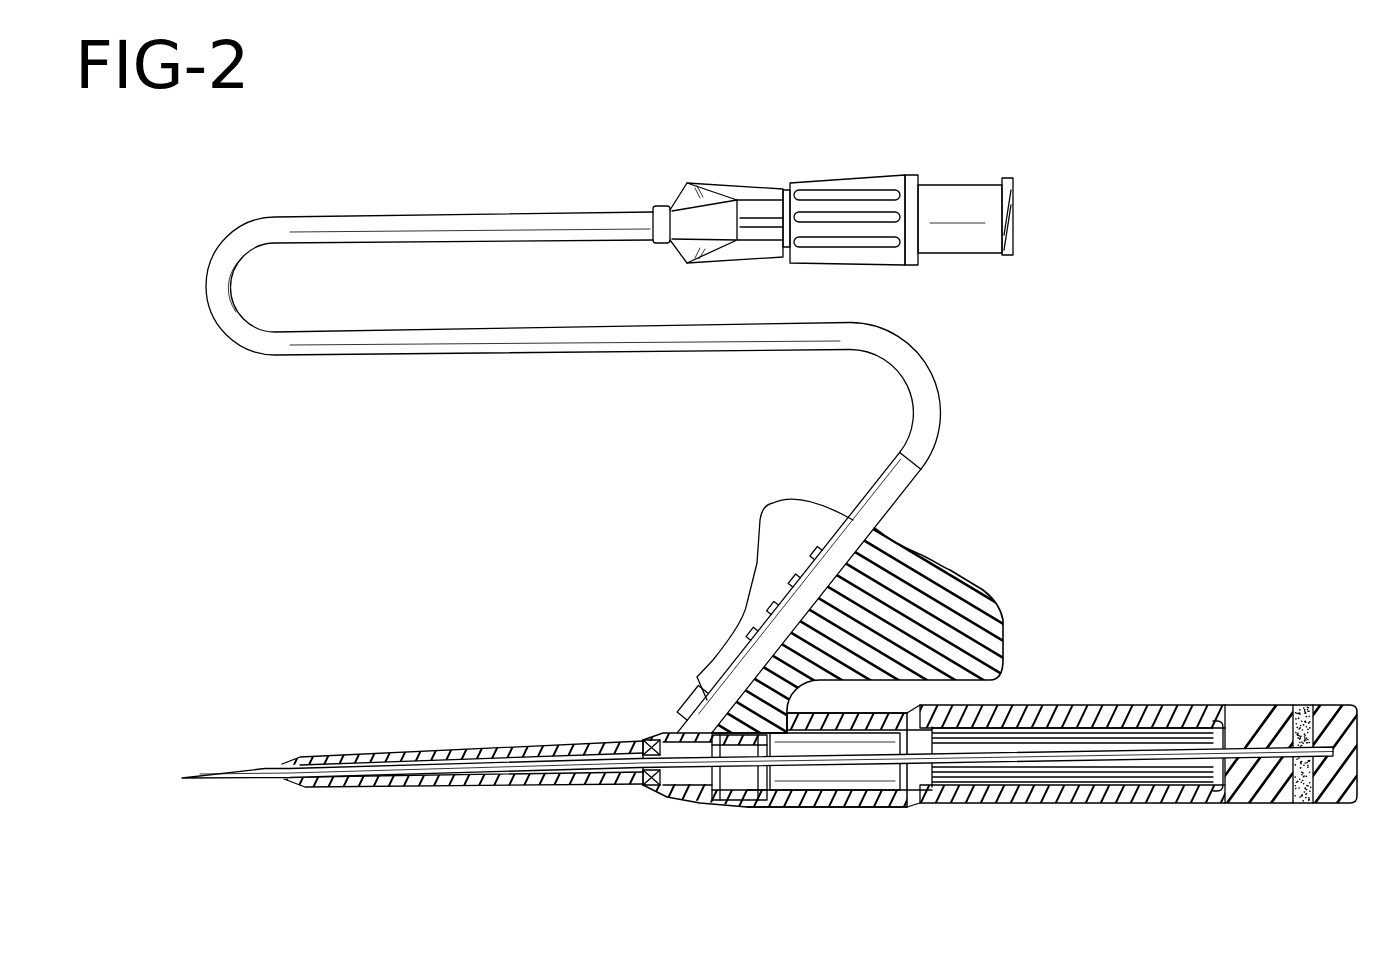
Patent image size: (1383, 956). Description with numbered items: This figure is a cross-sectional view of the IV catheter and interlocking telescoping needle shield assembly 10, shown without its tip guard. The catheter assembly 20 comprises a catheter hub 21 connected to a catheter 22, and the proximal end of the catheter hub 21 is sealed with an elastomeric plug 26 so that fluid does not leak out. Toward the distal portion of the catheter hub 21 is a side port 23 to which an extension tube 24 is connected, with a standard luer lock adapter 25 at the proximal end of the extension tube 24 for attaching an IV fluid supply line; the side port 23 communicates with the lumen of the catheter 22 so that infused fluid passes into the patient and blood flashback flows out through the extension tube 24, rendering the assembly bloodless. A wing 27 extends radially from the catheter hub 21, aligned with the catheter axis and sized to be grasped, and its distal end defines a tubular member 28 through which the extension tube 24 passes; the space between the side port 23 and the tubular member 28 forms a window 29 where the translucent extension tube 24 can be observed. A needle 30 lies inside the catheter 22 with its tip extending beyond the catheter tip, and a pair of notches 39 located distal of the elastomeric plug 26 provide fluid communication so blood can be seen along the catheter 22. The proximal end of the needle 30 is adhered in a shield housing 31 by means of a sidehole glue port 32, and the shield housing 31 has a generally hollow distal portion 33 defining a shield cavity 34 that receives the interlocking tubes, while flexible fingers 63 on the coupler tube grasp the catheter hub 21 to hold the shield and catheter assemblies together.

The catheter assembly with interlocking telescopic needle shield assembly 10 is at (1232, 280).
The catheter assembly 20 is at (595, 727).
The catheter hub 21 is at (780, 807).
The catheter 22 is at (465, 753).
The side port 23 is at (677, 720).
The extension tube 24 is at (921, 397).
The luer lock adapter 25 is at (812, 182).
The elastomeric plug 26 is at (727, 777).
The wing 27 is at (933, 560).
The tubular member 28 is at (773, 503).
The window 29 is at (727, 652).
The needle 30 is at (222, 768).
The shield housing 31 is at (1253, 705).
The sidehole glue port 32 is at (1303, 705).
The hollow distal portion 33 is at (1043, 807).
The shield cavity 34 is at (1117, 727).
The notches 39 is at (345, 768).
The flexible fingers 63 is at (857, 713).